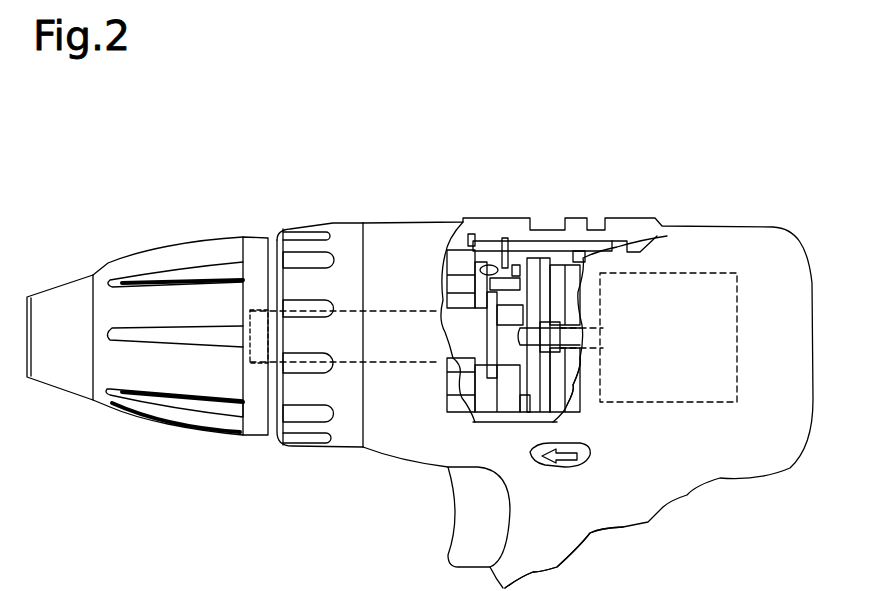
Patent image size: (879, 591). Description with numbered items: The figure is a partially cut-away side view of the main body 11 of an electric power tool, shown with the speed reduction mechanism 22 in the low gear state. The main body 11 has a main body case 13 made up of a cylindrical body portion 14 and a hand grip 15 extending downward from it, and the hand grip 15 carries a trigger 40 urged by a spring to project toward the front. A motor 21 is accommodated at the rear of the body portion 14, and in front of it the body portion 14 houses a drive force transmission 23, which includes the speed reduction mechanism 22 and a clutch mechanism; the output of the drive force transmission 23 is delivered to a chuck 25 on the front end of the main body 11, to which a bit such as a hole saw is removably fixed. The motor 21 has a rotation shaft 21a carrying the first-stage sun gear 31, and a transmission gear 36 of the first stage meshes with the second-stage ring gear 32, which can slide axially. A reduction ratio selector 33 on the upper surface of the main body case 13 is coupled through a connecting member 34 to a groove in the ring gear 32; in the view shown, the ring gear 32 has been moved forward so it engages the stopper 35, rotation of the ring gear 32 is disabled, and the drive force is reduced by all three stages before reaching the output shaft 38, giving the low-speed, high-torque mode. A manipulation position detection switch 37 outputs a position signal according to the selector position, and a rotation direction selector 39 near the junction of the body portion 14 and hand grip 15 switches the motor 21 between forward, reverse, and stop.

The main body 11 is at (748, 135).
The main body case 13 is at (548, 382).
The body portion 14 is at (742, 227).
The hand grip 15 is at (645, 522).
The motor 21 is at (742, 336).
The rotation shaft 21a is at (577, 362).
The speed reduction mechanism 22 is at (588, 262).
The drive force transmission 23 is at (464, 216).
The chuck 25 is at (143, 262).
The sun gear 31 is at (560, 327).
The ring gear 32 is at (518, 264).
The reduction ratio selector 33 is at (577, 218).
The connecting member 34 is at (505, 237).
The stopper 35 is at (494, 266).
The transmission gear 36 is at (525, 392).
The manipulation position detection switch 37 is at (466, 238).
The output shaft 38 is at (238, 317).
The rotation direction selector 39 is at (581, 456).
The trigger 40 is at (467, 513).